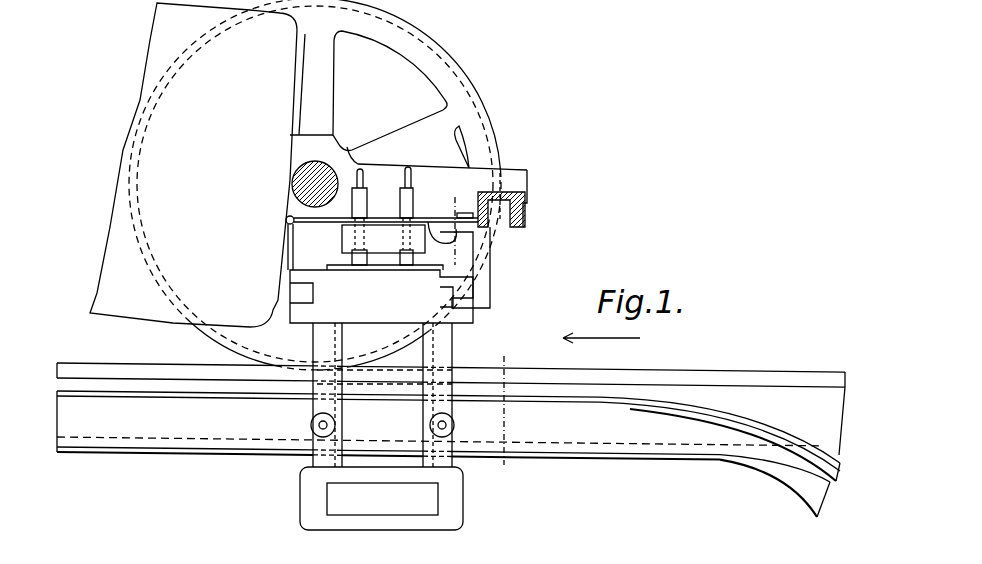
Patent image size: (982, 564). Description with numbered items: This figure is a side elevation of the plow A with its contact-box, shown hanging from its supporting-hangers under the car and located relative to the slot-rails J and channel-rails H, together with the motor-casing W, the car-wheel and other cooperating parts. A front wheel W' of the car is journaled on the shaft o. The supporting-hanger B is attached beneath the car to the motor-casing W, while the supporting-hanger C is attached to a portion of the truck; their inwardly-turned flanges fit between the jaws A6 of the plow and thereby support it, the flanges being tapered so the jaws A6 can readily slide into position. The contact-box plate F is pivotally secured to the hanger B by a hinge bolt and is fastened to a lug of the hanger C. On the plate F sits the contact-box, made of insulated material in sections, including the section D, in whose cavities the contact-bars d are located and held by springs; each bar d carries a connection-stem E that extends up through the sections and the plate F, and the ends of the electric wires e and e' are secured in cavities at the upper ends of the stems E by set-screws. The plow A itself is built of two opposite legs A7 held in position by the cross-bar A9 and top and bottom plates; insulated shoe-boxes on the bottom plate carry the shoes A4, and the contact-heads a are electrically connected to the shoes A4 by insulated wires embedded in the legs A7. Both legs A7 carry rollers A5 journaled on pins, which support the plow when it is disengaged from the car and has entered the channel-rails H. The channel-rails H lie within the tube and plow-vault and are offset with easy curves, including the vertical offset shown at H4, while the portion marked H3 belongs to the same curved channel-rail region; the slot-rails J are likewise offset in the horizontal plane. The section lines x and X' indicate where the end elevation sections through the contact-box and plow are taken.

The motor-casing W is at (193, 165).
The front wheels W' is at (328, 185).
The shaft o is at (315, 175).
The electric wire e is at (371, 162).
The electric wire e' is at (428, 163).
The connection-stem E is at (363, 195).
The contact-box section D is at (383, 239).
The contact-bar d is at (350, 257).
The contact-box plate F is at (442, 232).
The section line x x is at (453, 230).
The supporting-hanger C is at (488, 281).
The contact-head a is at (385, 278).
The plow A is at (390, 552).
The jaws A6 is at (370, 291).
The supporting-hanger B is at (291, 263).
The legs A7 is at (444, 354).
The cross-bar A9 is at (384, 376).
The section line x' x' X' is at (507, 411).
The rollers A5 is at (311, 425).
The shoe A4 is at (381, 498).
The channel-rails H is at (451, 411).
The slot-rails J is at (827, 413).
The curved rail H3 is at (750, 432).
The vertical offset of channel-rails H4 is at (775, 486).